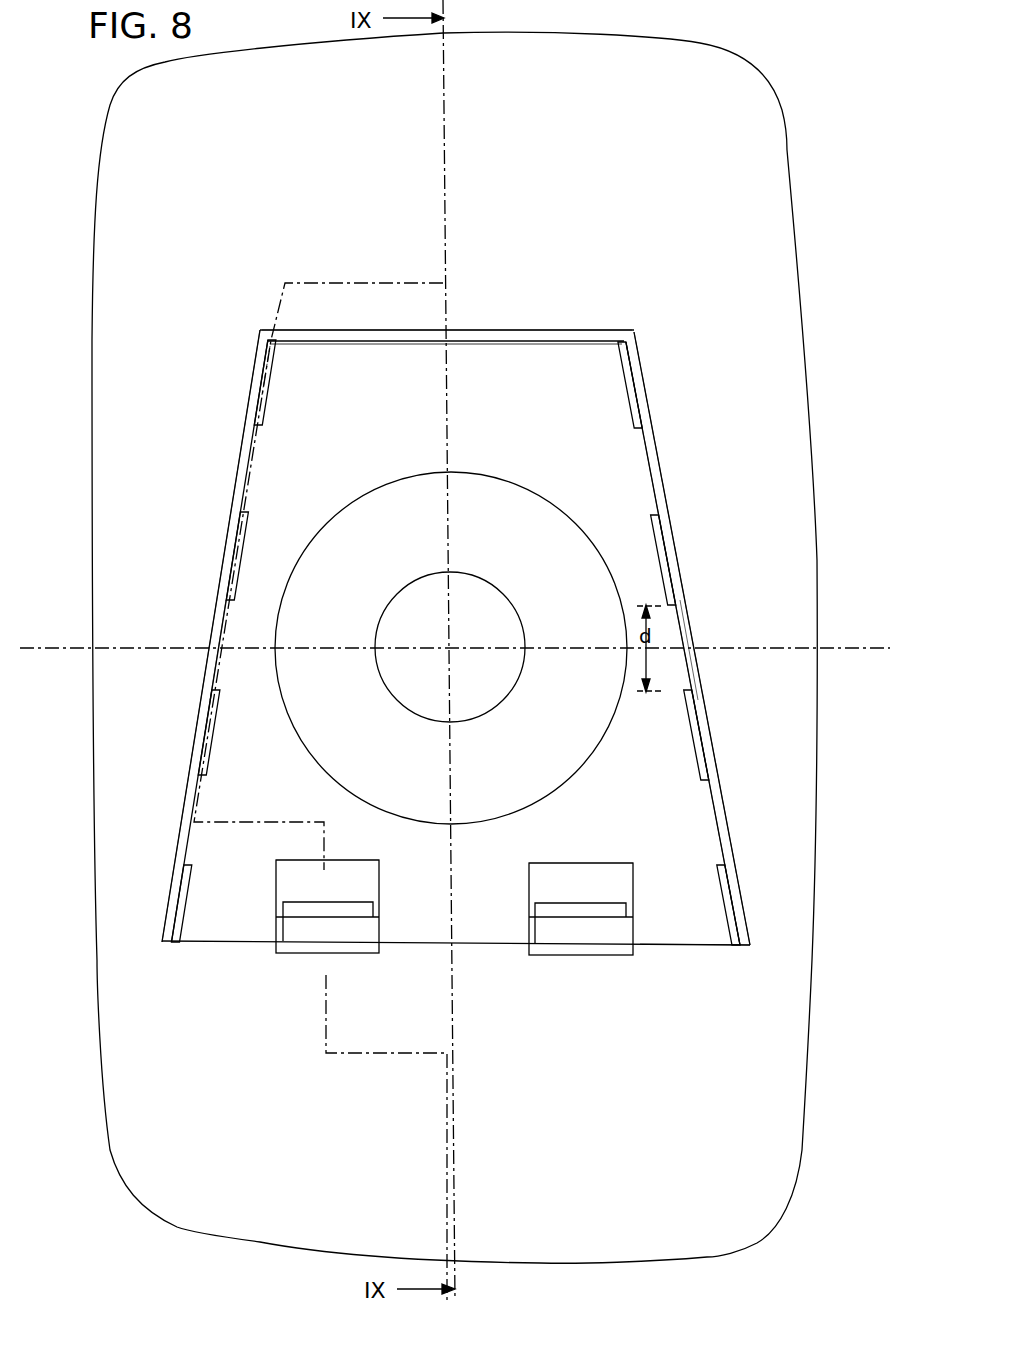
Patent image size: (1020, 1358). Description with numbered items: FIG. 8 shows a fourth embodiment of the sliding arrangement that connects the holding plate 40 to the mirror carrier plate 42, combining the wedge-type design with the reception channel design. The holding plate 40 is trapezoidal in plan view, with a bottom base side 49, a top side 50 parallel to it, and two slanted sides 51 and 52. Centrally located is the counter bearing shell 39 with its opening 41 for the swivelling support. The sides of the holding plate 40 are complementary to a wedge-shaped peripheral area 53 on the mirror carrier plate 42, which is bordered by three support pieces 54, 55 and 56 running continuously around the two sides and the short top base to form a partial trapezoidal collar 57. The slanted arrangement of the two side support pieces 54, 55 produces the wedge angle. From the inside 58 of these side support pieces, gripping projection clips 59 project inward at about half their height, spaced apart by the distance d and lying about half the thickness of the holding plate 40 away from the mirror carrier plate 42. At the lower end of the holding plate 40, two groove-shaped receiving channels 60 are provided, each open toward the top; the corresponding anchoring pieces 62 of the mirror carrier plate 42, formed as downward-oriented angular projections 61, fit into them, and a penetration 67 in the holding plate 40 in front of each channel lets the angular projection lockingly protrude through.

The counter bearing shell 39 is at (568, 744).
The holding plate 40 is at (618, 457).
The opening 41 is at (469, 698).
The mirror carrier plate 42 is at (765, 232).
The bottom base side 49 is at (706, 946).
The top side 50 is at (446, 362).
The side 51 is at (254, 461).
The side 52 is at (652, 494).
The peripheral area 53 is at (278, 391).
The support piece 54 is at (236, 488).
The support piece 55 is at (666, 508).
The support piece 56 is at (492, 339).
The partial trapezoidal collar 57 is at (658, 402).
The inside 58 is at (226, 621).
The gripping projection clips 59 is at (243, 539).
The receiving channel 60 is at (341, 943).
The angular projection 61 is at (358, 902).
The anchoring piece 62 is at (363, 929).
The penetration 67 is at (353, 861).